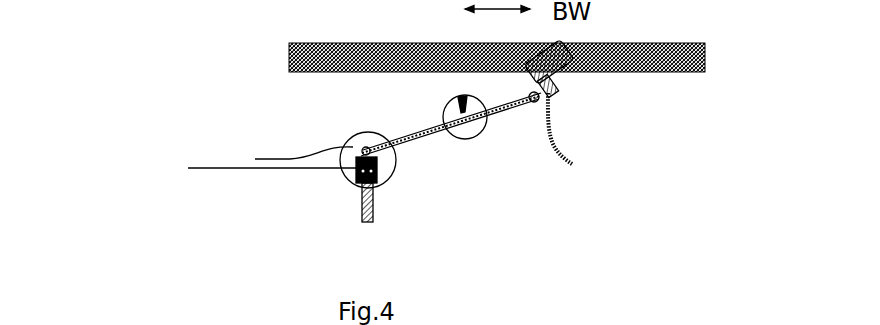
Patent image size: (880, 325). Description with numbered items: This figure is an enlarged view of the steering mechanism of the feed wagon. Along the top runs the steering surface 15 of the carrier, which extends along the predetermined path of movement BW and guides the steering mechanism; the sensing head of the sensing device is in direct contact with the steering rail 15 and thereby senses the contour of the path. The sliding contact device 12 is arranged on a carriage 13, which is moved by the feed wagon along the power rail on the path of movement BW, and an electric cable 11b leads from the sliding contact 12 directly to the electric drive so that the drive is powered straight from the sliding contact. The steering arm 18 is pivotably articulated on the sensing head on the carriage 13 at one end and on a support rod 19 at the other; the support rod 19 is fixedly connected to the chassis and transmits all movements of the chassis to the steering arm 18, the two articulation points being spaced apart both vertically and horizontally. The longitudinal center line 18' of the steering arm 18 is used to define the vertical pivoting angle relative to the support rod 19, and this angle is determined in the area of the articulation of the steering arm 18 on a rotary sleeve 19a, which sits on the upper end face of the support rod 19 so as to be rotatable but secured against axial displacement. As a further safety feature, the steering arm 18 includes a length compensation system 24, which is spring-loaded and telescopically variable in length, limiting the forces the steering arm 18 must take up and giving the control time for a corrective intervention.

The steering surface 15 is at (708, 47).
The sliding contact device 12 is at (575, 70).
The carriage 13 is at (560, 97).
The electric cable 11b is at (567, 150).
The steering arm 18 is at (451, 160).
The longitudinal center line of the steering arm 18' is at (766, 292).
The length compensation system 24 is at (487, 133).
The support rod 19 is at (360, 210).
The rotary sleeve 19a is at (380, 190).